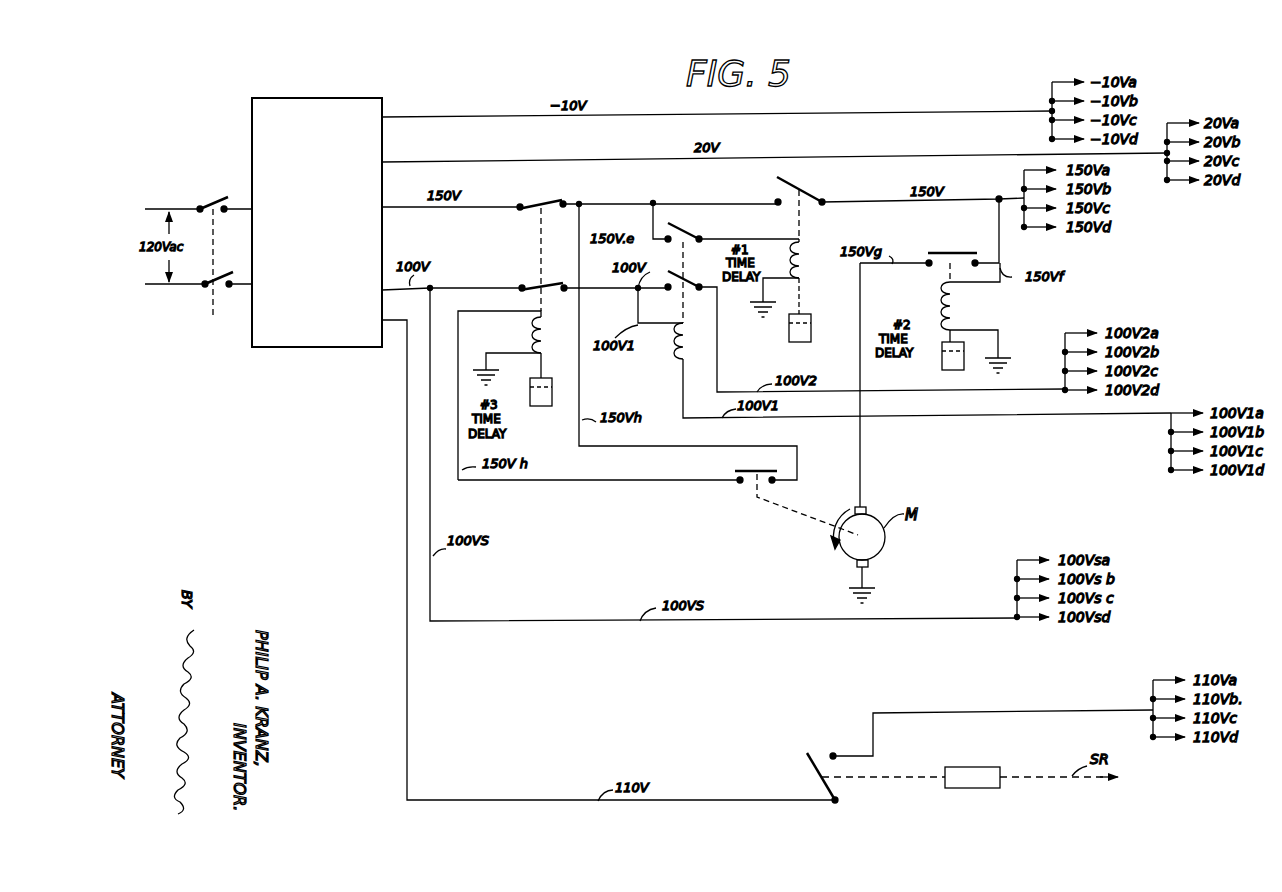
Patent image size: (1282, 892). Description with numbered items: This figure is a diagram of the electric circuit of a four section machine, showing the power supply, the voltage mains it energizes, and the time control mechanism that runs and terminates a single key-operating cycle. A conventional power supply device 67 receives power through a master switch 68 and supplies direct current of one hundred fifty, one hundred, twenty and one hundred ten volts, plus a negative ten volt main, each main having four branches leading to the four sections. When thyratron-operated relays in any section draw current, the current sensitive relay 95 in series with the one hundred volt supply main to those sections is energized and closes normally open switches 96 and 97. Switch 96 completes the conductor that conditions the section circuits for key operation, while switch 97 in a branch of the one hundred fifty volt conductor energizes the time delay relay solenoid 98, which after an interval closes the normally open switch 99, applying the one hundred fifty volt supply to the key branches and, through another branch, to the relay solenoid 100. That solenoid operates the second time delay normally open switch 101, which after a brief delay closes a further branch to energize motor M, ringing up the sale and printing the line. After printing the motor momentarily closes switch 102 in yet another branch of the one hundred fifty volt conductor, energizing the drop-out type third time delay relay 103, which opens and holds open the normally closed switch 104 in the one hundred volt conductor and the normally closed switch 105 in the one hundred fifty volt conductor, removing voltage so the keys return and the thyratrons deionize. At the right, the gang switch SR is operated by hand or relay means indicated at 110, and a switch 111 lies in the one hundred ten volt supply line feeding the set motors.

The power supply device 67 is at (324, 139).
The master switch 68 is at (212, 316).
The current sensitive relay 95 is at (689, 348).
The normally open switch 96 is at (686, 281).
The normally open switch 97 is at (686, 232).
The time delay relay solenoid 98 is at (809, 272).
The normally open switch 99 is at (800, 187).
The relay solenoid 100 is at (959, 301).
The second time delay normally open switch 101 is at (934, 252).
The switch 102 is at (740, 492).
The third time delay relay 103 is at (545, 327).
The normally closed switch 104 is at (522, 284).
The normally closed switch 105 is at (537, 200).
The switch operating means 110 is at (966, 788).
The switch 111 is at (818, 740).